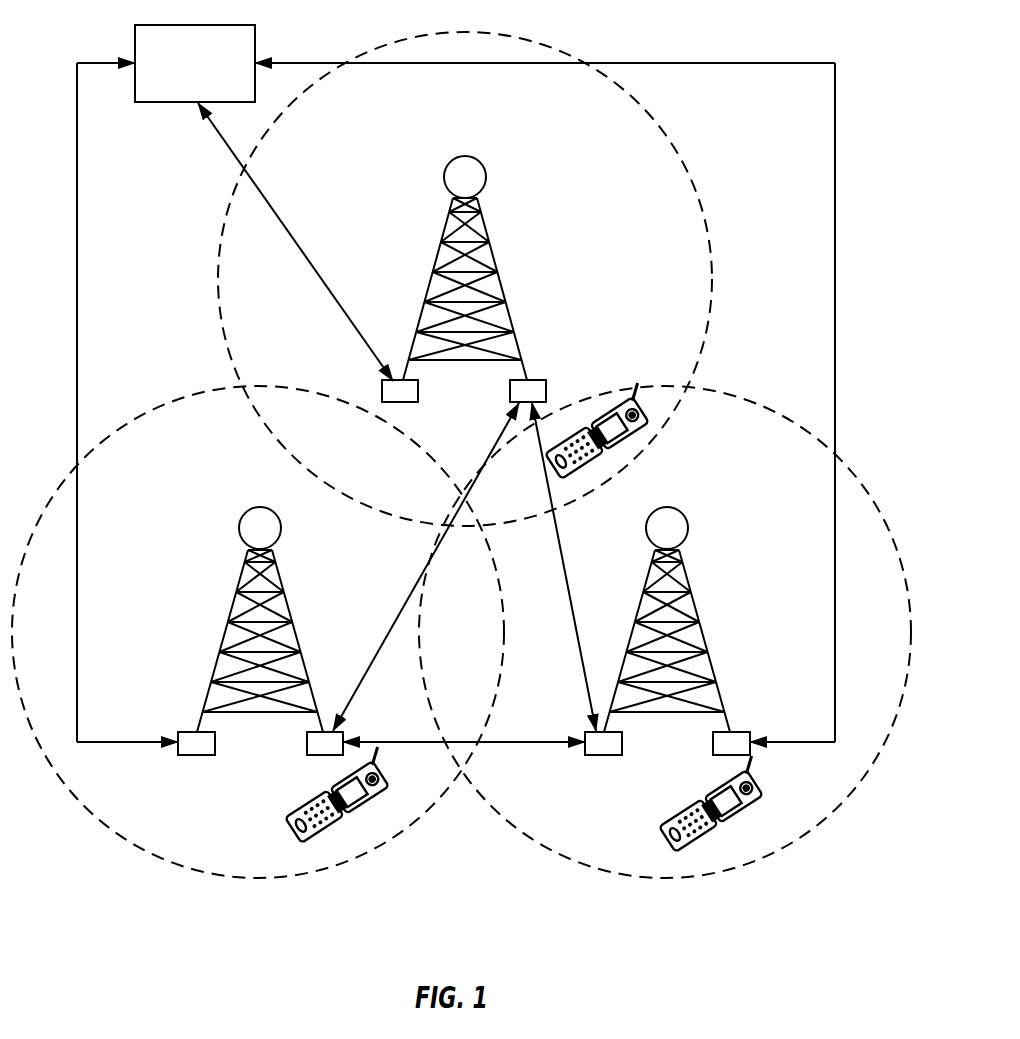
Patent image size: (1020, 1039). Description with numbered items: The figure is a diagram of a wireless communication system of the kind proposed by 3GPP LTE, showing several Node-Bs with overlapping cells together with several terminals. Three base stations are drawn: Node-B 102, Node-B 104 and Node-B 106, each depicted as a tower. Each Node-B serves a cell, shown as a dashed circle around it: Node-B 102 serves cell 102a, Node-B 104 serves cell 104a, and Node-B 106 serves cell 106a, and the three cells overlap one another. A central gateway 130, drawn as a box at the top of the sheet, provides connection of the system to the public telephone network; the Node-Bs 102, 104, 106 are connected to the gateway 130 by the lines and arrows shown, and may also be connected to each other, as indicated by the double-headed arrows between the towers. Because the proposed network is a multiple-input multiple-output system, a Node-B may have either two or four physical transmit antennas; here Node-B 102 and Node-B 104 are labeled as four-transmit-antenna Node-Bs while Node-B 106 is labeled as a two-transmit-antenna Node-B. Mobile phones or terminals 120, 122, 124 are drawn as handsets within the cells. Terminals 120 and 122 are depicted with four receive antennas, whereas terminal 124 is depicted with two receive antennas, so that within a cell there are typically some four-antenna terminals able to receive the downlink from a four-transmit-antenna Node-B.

The Node-B 102 is at (701, 626).
The cell 102a is at (722, 390).
The Node-B 104 is at (499, 276).
The cell 104a is at (463, 32).
The Node-B 106 is at (291, 610).
The cell 106a is at (212, 389).
The terminal 120 is at (643, 440).
The terminal 122 is at (358, 825).
The terminal 124 is at (706, 845).
The central gateway 130 is at (175, 76).